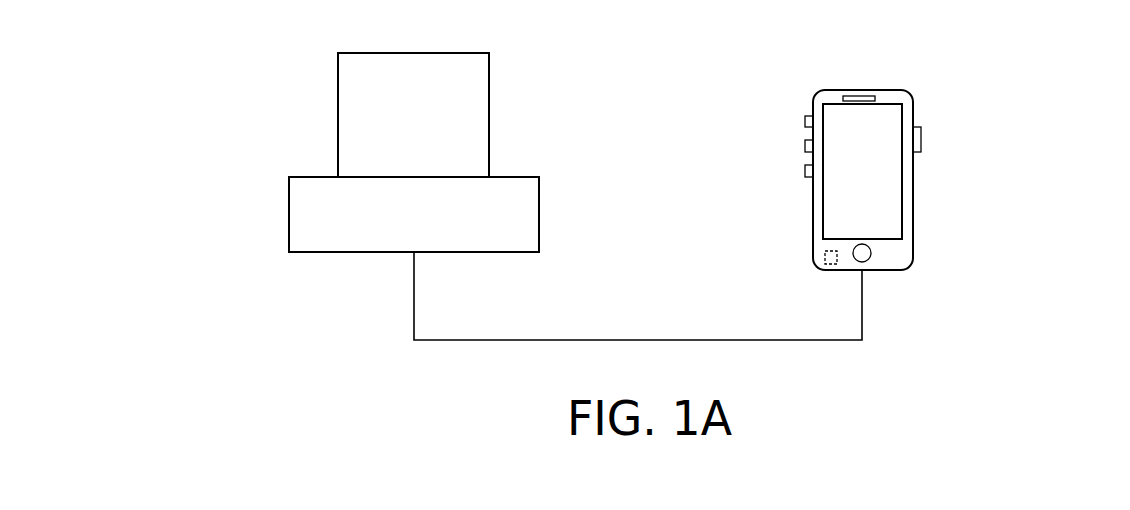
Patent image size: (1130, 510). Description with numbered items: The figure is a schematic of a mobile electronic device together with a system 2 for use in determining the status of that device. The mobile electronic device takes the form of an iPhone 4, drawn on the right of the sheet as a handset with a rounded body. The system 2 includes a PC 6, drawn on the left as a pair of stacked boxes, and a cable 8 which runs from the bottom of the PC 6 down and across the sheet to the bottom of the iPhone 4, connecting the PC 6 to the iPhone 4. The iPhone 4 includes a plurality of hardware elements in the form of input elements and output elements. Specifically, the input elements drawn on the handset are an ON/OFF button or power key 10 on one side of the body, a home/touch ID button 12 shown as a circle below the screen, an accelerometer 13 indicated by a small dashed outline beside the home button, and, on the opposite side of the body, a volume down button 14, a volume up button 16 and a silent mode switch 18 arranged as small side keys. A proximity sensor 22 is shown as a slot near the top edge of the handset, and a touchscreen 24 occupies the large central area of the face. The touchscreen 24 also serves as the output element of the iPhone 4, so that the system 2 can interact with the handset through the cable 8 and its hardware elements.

The system 2 is at (336, 354).
The iPhone 4 is at (1002, 255).
The PC 6 is at (170, 216).
The cable 8 is at (480, 340).
The power key 10 is at (921, 141).
The home/touch ID button 12 is at (857, 260).
The accelerometer 13 is at (825, 258).
The volume down button 14 is at (805, 172).
The volume up button 16 is at (805, 146).
The silent mode switch 18 is at (805, 122).
The proximity sensor 22 is at (857, 92).
The touchscreen 24 is at (888, 117).